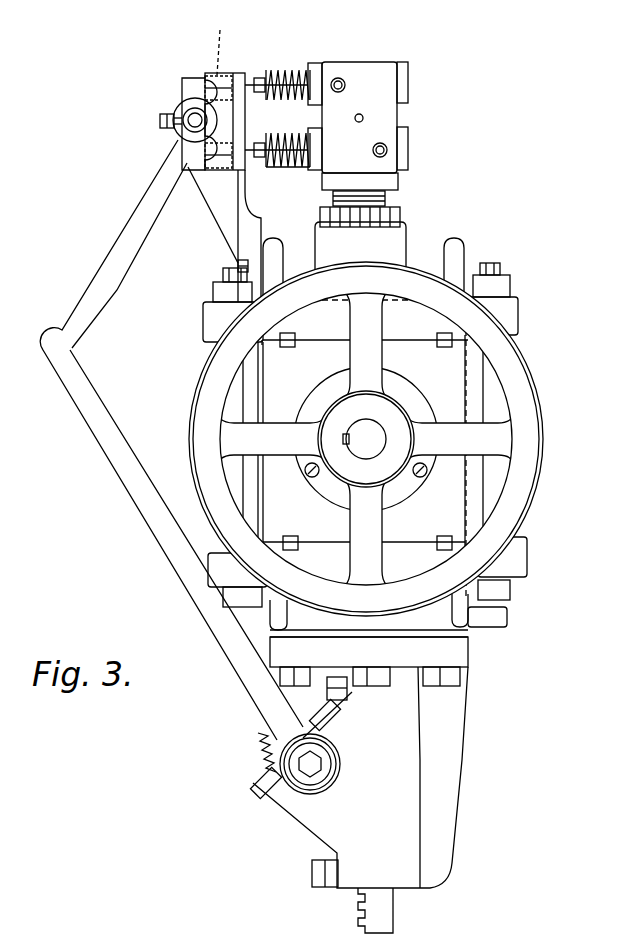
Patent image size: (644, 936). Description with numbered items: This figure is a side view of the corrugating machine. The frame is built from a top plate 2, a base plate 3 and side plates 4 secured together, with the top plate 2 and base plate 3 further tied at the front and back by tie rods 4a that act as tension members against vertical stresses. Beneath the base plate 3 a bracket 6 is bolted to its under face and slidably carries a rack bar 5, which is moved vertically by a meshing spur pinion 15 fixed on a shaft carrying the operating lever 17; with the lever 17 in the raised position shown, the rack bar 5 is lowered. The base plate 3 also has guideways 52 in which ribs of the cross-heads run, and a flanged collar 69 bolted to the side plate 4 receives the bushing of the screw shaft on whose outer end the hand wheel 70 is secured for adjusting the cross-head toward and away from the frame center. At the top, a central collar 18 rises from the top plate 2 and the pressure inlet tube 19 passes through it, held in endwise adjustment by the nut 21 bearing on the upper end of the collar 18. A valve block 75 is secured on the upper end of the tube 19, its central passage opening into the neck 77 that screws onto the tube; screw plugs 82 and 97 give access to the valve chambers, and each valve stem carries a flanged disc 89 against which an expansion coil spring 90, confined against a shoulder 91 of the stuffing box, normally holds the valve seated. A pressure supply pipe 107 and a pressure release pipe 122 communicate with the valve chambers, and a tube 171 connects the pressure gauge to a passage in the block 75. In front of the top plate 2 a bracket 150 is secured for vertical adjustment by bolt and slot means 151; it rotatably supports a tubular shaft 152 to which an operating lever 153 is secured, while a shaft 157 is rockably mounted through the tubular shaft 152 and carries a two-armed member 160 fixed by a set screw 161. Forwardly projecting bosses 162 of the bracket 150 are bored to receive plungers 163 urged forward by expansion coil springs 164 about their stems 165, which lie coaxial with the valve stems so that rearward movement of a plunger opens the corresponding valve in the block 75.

The top plate 2 is at (458, 262).
The base plate 3 is at (464, 610).
The side plates 4 is at (313, 352).
The tie rods 4a is at (498, 263).
The rack bar 5 is at (370, 912).
The bracket 6 is at (405, 762).
The spur pinion 15 is at (256, 747).
The operating lever 17 is at (136, 498).
The central collar 18 is at (330, 236).
The pressure inlet tube 19 is at (333, 197).
The nut 21 is at (401, 214).
The guideways 52 is at (300, 530).
The flanged collar 69 is at (322, 394).
The hand wheel 70 is at (528, 422).
The valve block 75 is at (401, 110).
The neck 77 is at (388, 179).
The screw plug 82 is at (409, 148).
The flanged disc 89 is at (276, 170).
The expansion coil spring 90 is at (284, 100).
The shoulder 91 is at (313, 63).
The screw plug 97 is at (404, 78).
The pressure supply pipe 107 is at (373, 150).
The pressure release pipe 122 is at (340, 78).
The bracket 150 is at (256, 234).
The bolt and slot means 151 is at (237, 264).
The tubular shaft 152 is at (185, 163).
The operating lever 153 is at (138, 224).
The shaft 157 is at (190, 128).
The two-armed member 160 is at (183, 98).
The set screw 161 is at (159, 121).
The bosses 162 is at (204, 80).
The plungers 163 is at (200, 82).
The expansion coil springs 164 is at (221, 43).
The stems 165 is at (234, 78).
The tube 171 is at (363, 115).